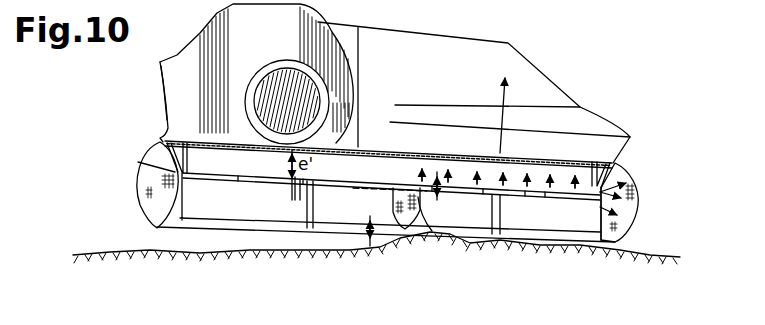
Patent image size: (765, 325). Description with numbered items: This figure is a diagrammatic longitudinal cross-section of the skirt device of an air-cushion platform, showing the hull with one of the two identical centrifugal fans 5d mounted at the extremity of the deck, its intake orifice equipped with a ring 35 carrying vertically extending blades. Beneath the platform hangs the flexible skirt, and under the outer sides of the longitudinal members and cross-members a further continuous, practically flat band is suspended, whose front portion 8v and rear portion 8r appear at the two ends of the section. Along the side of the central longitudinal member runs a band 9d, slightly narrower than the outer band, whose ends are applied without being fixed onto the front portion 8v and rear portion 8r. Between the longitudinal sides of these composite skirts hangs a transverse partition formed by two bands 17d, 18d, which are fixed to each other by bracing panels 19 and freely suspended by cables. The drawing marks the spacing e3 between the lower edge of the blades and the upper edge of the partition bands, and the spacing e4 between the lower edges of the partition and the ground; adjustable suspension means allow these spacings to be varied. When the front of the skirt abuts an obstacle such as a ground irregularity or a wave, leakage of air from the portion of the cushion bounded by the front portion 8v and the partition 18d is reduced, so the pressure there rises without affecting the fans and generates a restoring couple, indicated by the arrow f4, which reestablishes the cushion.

The ring 35 is at (277, 77).
The centrifugal fan 5d is at (182, 83).
The band 9d is at (391, 194).
The rear portion of band 8r is at (182, 203).
The front portion of band 8v is at (600, 209).
The restoring couple arrow f4 is at (487, 115).
The band 17d is at (396, 202).
The band 18d is at (432, 231).
The spacing e3 is at (461, 195).
The spacing e4 is at (377, 258).
The bracing panel 19 is at (369, 246).